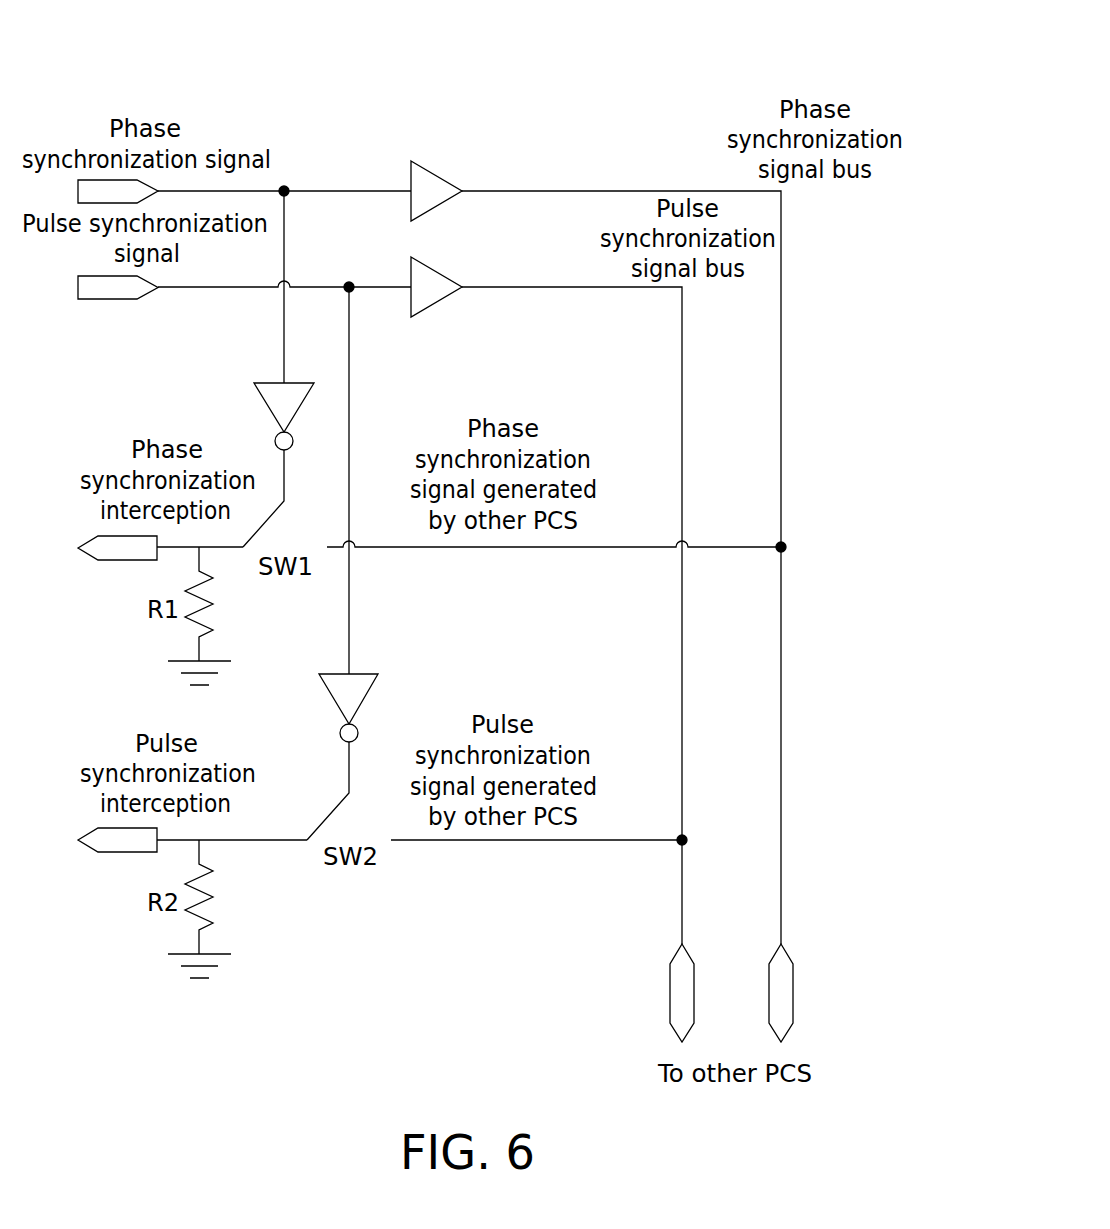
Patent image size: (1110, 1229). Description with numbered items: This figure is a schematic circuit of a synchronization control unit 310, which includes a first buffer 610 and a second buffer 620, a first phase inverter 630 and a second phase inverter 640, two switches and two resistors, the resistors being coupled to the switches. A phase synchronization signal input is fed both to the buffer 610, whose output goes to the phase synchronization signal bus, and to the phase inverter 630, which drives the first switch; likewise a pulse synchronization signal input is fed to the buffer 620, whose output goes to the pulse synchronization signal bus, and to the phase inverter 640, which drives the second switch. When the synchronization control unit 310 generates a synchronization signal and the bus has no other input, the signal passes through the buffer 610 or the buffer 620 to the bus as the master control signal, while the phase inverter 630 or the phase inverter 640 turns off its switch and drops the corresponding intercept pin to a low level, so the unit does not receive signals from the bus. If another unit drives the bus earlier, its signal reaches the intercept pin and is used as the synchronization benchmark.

The synchronization control unit 310 is at (890, 42).
The buffer 610 is at (436, 173).
The buffer 620 is at (436, 269).
The phase inverter 630 is at (267, 412).
The phase inverter 640 is at (333, 703).